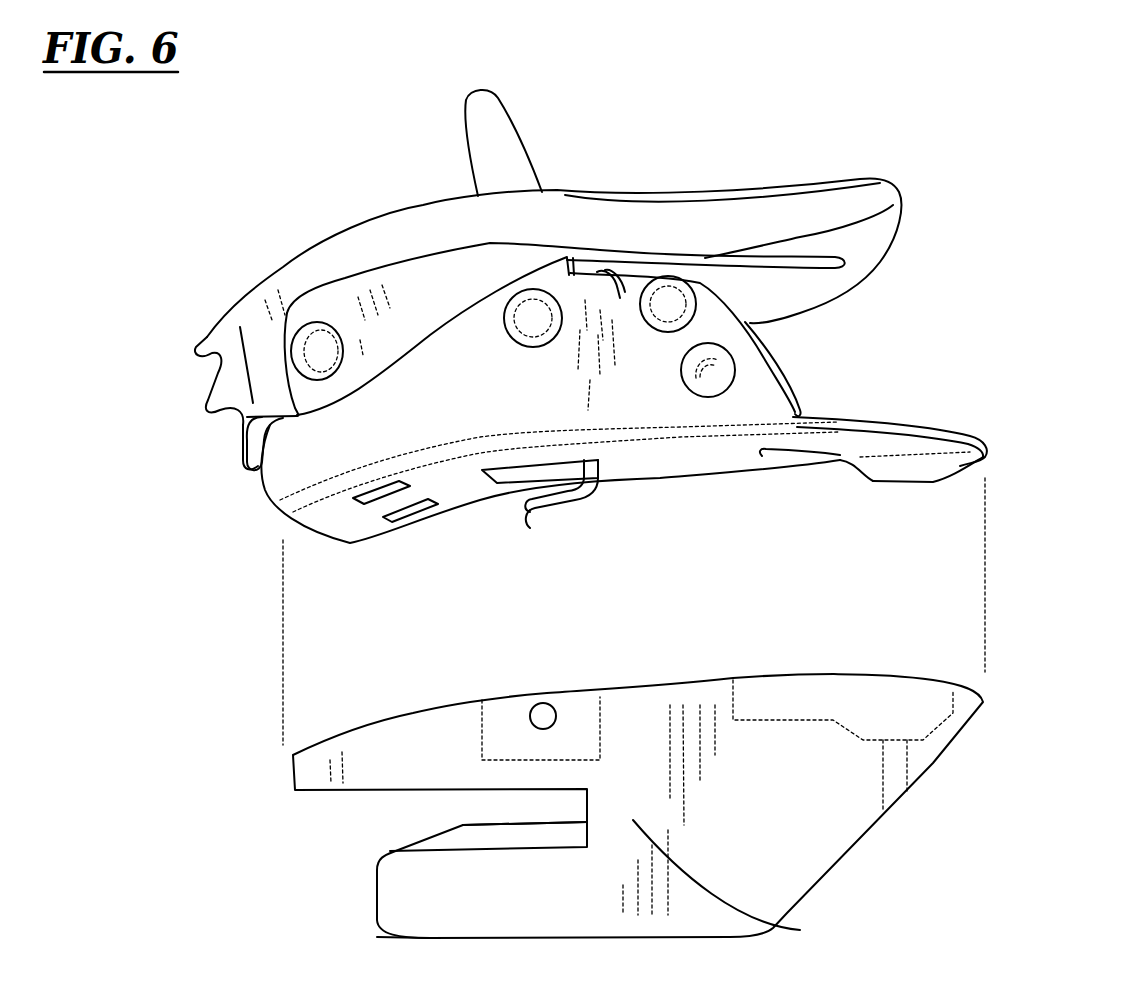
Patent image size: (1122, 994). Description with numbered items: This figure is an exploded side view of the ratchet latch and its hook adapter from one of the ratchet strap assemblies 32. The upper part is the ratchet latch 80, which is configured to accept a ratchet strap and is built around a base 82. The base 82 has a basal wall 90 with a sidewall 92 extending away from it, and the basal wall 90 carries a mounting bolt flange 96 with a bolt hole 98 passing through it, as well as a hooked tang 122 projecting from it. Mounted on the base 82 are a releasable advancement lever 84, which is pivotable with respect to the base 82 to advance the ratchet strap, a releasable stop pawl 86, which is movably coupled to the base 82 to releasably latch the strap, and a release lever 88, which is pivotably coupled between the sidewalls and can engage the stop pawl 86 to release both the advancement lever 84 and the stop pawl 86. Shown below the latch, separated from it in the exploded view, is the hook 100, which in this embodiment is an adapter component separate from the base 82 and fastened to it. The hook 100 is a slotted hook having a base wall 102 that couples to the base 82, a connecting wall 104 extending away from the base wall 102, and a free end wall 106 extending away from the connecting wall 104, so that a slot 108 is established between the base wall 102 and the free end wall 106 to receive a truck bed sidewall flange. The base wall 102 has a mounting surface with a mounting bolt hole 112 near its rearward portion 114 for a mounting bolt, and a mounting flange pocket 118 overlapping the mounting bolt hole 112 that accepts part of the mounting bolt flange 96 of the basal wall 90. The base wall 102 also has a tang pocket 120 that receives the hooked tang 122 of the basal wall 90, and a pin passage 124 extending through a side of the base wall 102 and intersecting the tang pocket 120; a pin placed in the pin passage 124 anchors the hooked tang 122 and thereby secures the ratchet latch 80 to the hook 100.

The ratchet strap assembly 32 is at (674, 143).
The ratchet latch 80 is at (845, 146).
The base 82 is at (268, 500).
The releasable advancement lever 84 is at (813, 193).
The releasable stop pawl 86 is at (800, 378).
The release lever 88 is at (464, 130).
The basal wall 90 is at (653, 463).
The sidewall 92 is at (540, 336).
The mounting bolt flange 96 is at (866, 482).
The bolt hole 98 is at (910, 483).
The hook 100 is at (692, 636).
The base wall 102 is at (293, 783).
The connecting wall 104 is at (800, 930).
The free end wall 106 is at (375, 908).
The slot 108 is at (368, 830).
The mounting bolt hole 112 is at (895, 790).
The rearward portion 114 is at (1022, 699).
The mounting flange pocket 118 is at (855, 697).
The tang pocket 120 is at (581, 708).
The hooked tang 122 is at (546, 528).
The pin passage 124 is at (540, 712).